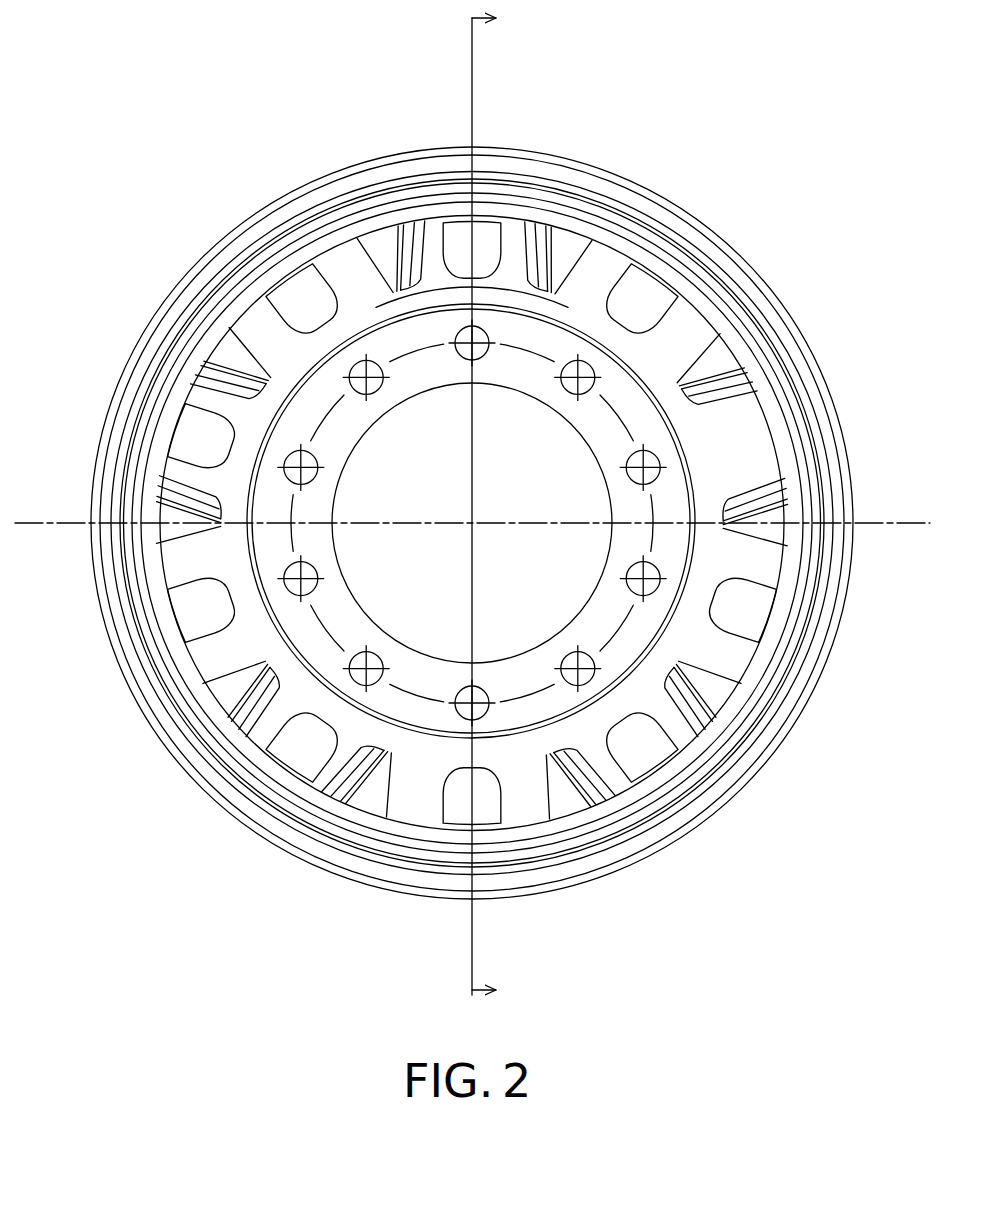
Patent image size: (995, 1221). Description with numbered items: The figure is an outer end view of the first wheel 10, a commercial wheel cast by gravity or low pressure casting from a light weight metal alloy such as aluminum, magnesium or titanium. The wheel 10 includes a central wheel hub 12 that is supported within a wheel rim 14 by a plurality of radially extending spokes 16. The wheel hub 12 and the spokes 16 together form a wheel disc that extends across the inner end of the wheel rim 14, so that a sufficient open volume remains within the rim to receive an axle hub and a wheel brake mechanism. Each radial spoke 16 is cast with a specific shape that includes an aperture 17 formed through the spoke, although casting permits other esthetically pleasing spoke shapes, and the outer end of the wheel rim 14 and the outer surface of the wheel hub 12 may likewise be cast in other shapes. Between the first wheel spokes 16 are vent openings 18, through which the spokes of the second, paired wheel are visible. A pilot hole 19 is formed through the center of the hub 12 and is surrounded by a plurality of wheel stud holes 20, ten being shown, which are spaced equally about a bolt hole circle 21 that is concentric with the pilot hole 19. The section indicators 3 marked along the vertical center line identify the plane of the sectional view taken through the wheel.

The section line 3- 3 is at (466, 509).
The first wheel 10 is at (256, 186).
The wheel hub 12 is at (352, 430).
The wheel rim 14 is at (634, 190).
The wheel spoke 16 is at (363, 291).
The aperture 17 is at (631, 297).
The vent opening 18 is at (706, 355).
The pilot hole 19 is at (529, 578).
The wheel stud hole 20 is at (318, 499).
The bolt hole circle 21 is at (632, 432).